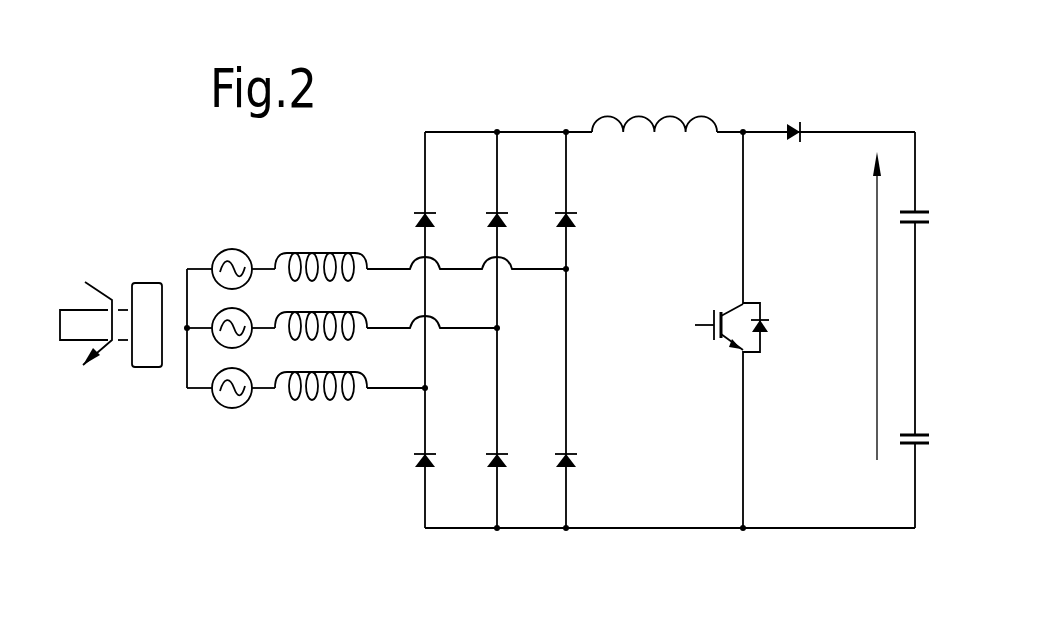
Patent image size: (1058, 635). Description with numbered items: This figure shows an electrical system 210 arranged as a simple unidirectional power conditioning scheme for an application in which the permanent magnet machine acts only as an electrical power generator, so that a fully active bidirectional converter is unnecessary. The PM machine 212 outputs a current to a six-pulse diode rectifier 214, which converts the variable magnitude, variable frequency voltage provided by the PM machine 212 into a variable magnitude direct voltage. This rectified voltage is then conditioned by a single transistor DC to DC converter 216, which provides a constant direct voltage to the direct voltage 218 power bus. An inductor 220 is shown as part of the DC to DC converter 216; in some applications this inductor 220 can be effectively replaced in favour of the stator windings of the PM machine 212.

The electrical system 210 is at (859, 92).
The PM machine 212 is at (147, 410).
The 6-pulse diode rectifier 214 is at (455, 562).
The single transistor DC to DC converter 216 is at (713, 374).
The direct voltage power bus 218 is at (877, 357).
The inductor 220 is at (680, 117).